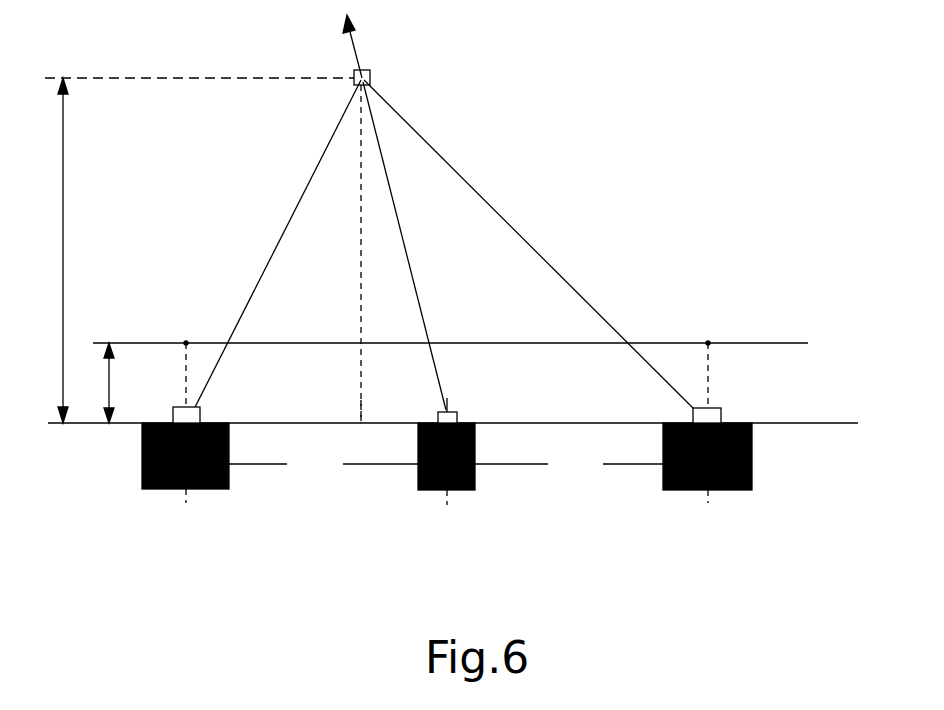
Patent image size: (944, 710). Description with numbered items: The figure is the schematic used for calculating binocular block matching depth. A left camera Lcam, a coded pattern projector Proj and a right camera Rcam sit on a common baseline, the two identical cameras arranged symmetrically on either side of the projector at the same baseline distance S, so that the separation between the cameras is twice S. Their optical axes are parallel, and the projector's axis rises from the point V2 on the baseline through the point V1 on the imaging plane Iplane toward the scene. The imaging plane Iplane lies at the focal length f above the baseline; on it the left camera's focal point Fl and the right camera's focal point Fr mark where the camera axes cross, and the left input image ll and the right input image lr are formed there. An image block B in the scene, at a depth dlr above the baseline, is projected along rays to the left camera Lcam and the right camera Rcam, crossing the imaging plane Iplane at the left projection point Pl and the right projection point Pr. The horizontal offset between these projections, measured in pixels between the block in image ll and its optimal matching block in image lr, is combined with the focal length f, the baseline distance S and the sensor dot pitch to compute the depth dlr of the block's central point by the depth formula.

The depth information dlr is at (76, 250).
The focal length f is at (118, 383).
The image block B is at (443, 50).
The point V1 is at (347, 254).
The point V2 is at (357, 428).
The left camera Lcam is at (198, 436).
The coded pattern projector Proj is at (444, 471).
The right camera Rcam is at (718, 436).
The left camera focal point Fl is at (170, 359).
The right camera focal point Fr is at (724, 365).
The left input image ll is at (209, 329).
The right input image lr is at (670, 332).
The left projection point Pl is at (237, 364).
The right projection point Pr is at (622, 367).
The baseline distance S is at (446, 464).
The imaging plane Iplane is at (740, 341).